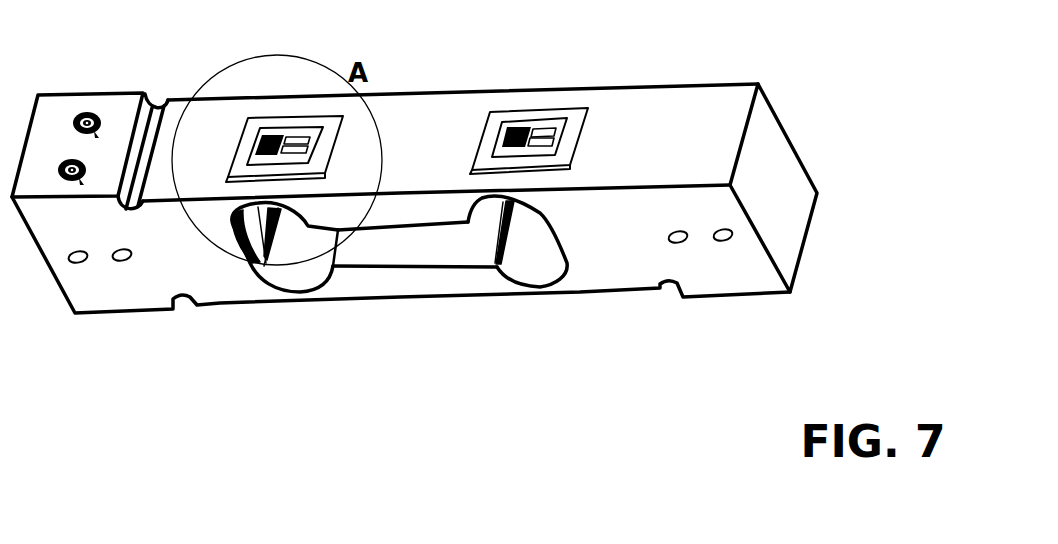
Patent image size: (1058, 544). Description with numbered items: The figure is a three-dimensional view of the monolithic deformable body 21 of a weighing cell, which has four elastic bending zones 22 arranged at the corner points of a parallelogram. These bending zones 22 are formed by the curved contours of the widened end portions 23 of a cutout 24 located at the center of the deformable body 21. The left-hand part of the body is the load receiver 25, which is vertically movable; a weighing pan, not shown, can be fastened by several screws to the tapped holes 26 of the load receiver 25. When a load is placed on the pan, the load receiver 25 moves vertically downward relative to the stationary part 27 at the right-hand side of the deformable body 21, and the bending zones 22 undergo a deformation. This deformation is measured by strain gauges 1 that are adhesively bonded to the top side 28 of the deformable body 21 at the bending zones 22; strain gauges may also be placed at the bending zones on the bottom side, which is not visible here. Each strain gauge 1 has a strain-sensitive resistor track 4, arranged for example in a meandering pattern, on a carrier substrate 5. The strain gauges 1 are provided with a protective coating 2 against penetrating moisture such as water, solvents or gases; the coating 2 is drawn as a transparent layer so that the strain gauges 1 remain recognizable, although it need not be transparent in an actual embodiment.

The strain gauge 1 is at (252, 145).
The protective coating 2 is at (328, 120).
The strain-sensitive resistor track 4 is at (262, 128).
The carrier substrate 5 is at (303, 128).
The deformable body 21 is at (642, 310).
The bending zones 22 is at (258, 207).
The widened end portions 23 is at (290, 267).
The cutout 24 is at (382, 244).
The load receiver 25 is at (100, 295).
The tapped holes 26 is at (68, 157).
The stationary part 27 is at (720, 257).
The top side 28 is at (397, 120).